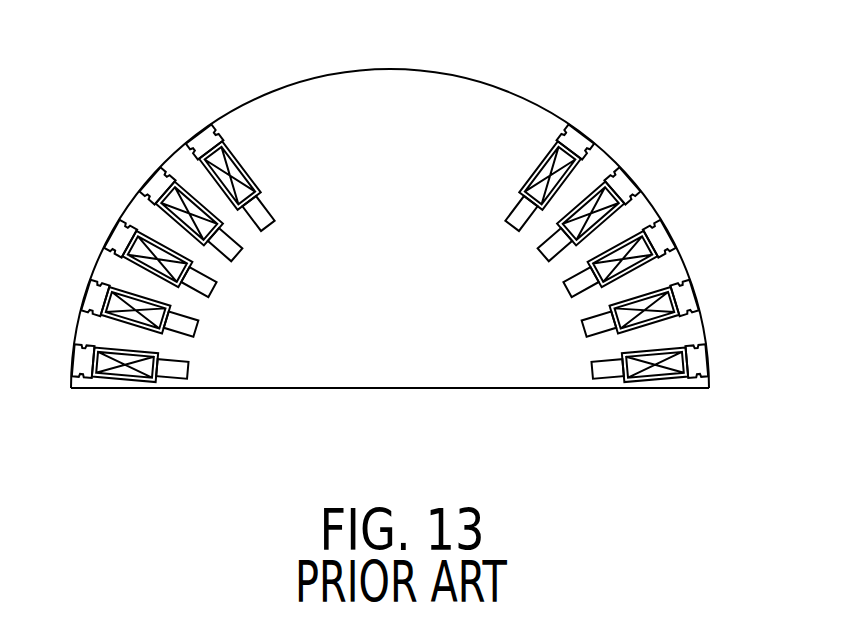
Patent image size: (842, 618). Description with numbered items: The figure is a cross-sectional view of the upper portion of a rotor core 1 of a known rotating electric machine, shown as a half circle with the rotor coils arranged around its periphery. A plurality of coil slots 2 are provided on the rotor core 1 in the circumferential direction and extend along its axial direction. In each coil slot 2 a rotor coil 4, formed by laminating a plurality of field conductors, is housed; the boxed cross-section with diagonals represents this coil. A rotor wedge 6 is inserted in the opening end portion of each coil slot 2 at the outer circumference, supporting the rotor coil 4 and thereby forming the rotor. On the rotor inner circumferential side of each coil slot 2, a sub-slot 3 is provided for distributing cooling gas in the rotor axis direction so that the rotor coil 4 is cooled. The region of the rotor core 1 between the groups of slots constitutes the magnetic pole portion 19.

The rotor core 1 is at (558, 375).
The coil slot 2 is at (122, 378).
The sub-slot 3 is at (175, 372).
The rotor coil 4 is at (632, 183).
The rotor wedge 6 is at (663, 236).
The magnetic pole portion 19 is at (430, 95).